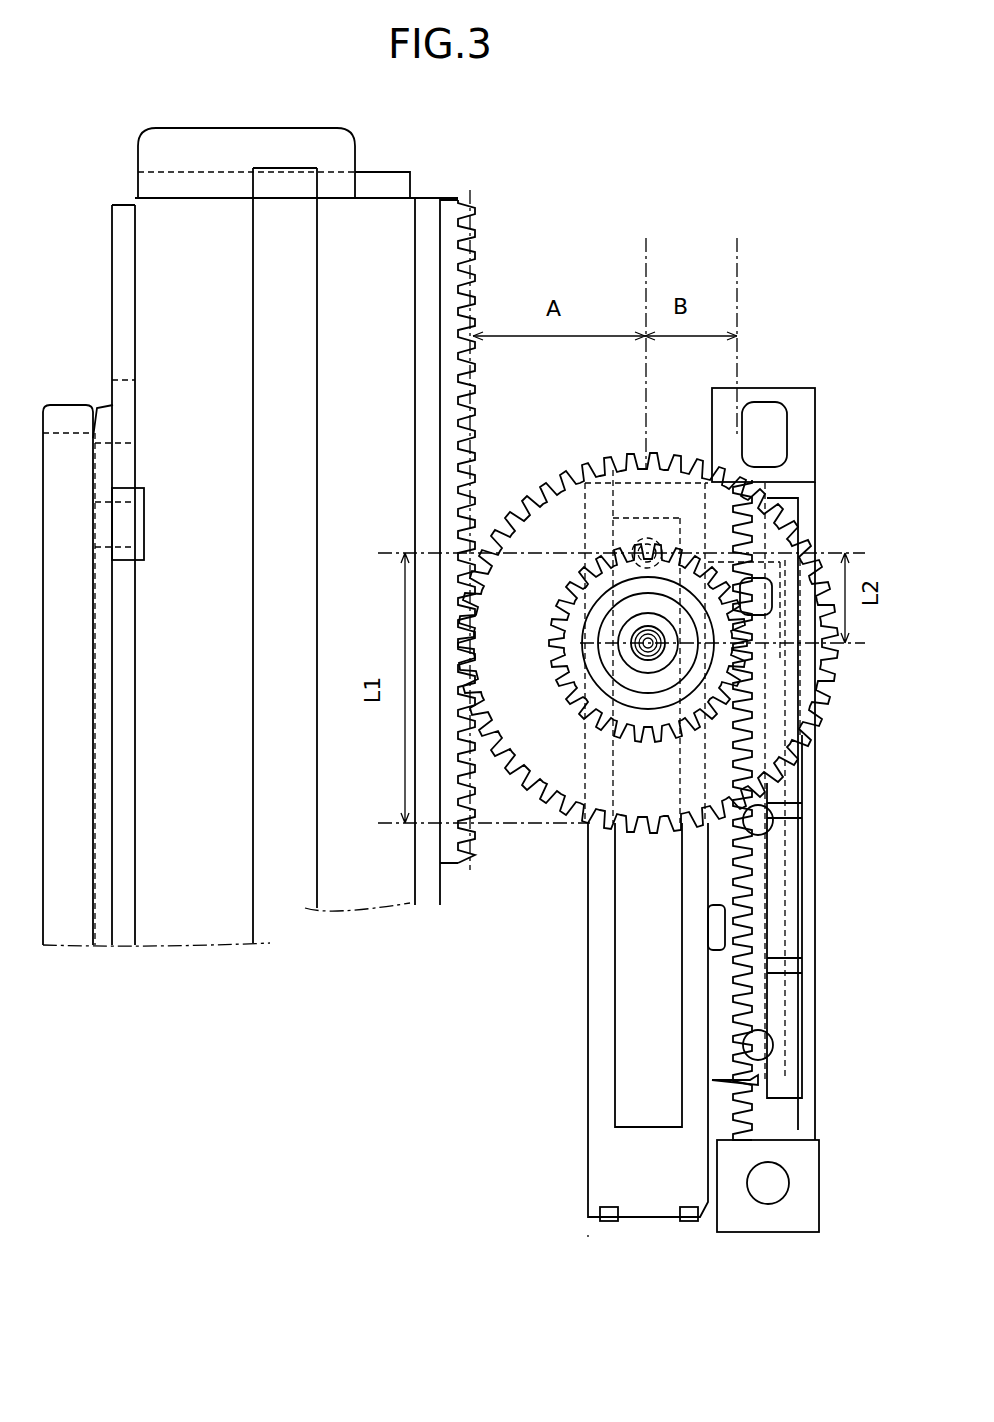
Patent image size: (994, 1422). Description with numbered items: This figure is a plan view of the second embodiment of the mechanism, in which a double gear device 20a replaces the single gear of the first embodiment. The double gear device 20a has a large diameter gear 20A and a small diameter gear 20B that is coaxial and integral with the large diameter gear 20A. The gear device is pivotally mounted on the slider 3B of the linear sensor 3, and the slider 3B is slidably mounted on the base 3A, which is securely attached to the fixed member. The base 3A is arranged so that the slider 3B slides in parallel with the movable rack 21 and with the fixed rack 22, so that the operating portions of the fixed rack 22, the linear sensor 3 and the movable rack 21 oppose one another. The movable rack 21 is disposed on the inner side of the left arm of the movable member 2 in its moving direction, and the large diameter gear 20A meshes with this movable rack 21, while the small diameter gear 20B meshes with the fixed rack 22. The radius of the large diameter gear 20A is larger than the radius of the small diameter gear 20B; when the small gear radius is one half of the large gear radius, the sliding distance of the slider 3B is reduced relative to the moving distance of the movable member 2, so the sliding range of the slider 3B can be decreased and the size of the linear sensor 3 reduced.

The movable member 2 is at (143, 270).
The movable rack 21 is at (457, 197).
The fixed rack 22 is at (790, 397).
The large diameter gear 20A is at (541, 536).
The small diameter gear 20B is at (620, 560).
The double gear device 20a is at (655, 650).
The linear sensor 3 is at (591, 1247).
The base 3A is at (641, 1198).
The slider 3B is at (662, 672).